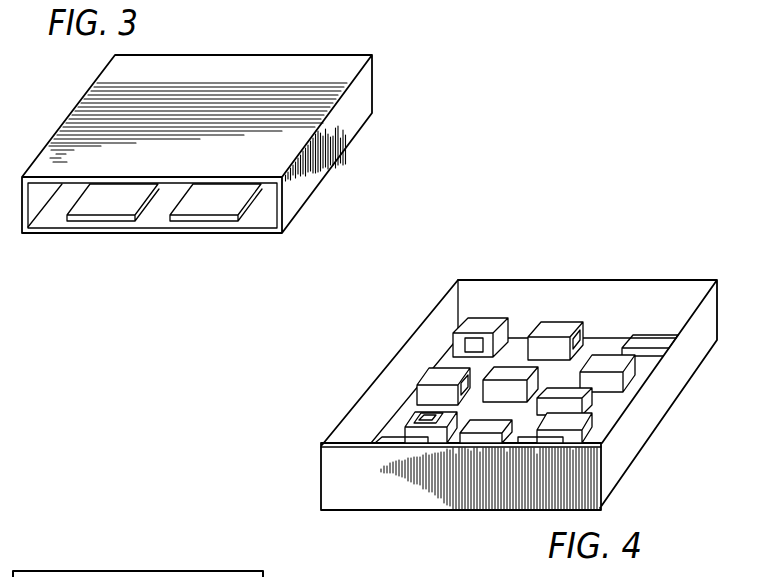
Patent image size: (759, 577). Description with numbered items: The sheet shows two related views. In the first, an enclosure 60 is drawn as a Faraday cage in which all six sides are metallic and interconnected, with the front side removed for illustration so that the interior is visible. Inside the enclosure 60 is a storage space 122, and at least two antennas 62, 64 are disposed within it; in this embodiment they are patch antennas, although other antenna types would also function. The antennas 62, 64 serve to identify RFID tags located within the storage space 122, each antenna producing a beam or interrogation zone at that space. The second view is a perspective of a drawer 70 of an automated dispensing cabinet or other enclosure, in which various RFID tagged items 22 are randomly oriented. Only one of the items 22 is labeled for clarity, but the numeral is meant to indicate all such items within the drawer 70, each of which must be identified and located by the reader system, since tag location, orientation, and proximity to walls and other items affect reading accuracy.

In FIG. 3, the enclosure 60 is at (318, 62).
In FIG. 3, the antenna 62 is at (117, 200).
In FIG. 3, the antenna 64 is at (220, 198).
In FIG. 3, the storage space 122 is at (32, 193).
In FIG. 4, the RFID tagged items 22 is at (480, 326).
In FIG. 4, the drawer 70 is at (664, 416).